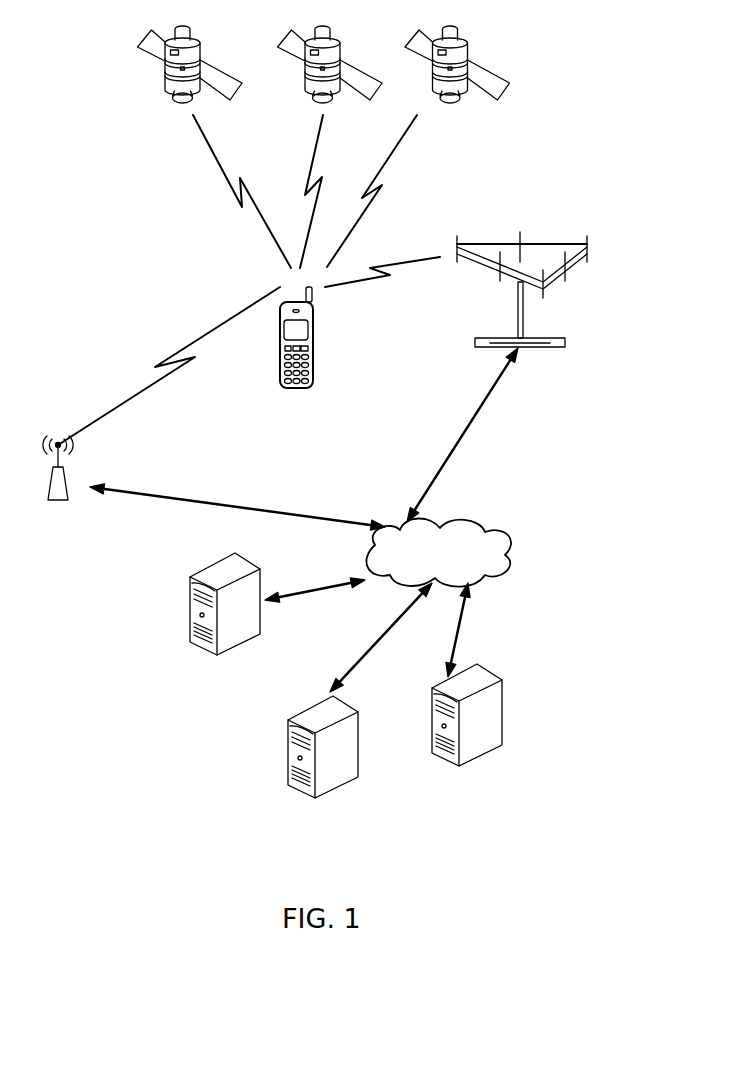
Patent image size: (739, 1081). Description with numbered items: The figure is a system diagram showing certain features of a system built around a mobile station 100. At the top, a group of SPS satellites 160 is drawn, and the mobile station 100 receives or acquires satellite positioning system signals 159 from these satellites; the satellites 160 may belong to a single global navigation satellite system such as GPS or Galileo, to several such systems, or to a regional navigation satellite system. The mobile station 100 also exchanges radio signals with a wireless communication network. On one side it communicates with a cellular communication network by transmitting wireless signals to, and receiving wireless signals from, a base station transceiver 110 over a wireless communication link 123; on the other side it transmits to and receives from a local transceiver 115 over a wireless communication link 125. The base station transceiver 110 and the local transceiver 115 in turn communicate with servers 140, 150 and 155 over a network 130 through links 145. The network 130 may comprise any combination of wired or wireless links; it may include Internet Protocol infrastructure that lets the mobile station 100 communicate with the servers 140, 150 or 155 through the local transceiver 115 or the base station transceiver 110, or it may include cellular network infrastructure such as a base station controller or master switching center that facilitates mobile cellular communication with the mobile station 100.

The mobile station 100 is at (272, 366).
The base station transceiver 110 is at (545, 348).
The local transceiver 115 is at (67, 503).
The wireless communication link 123 is at (350, 291).
The wireless communication link 125 is at (121, 404).
The network 130 is at (498, 531).
The server 140 is at (242, 557).
The links 145 is at (480, 410).
The server 150 is at (501, 681).
The server 155 is at (359, 725).
The satellite positioning system signals 159 is at (218, 152).
The SPS satellites 160 is at (129, 73).